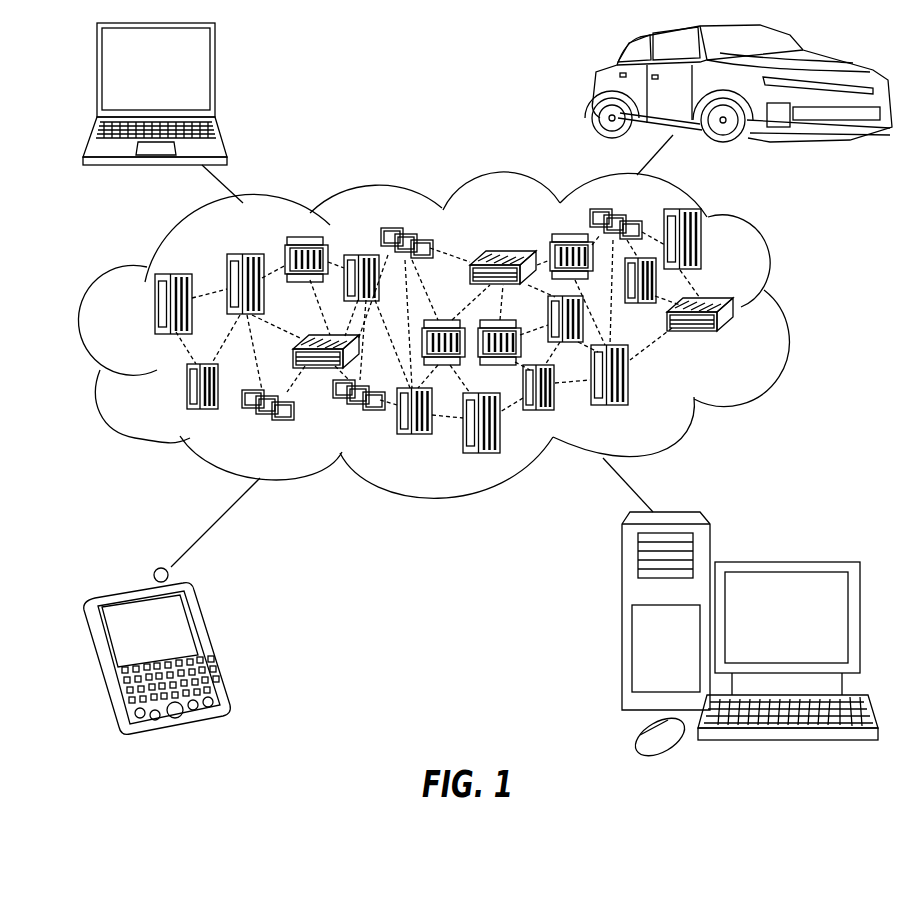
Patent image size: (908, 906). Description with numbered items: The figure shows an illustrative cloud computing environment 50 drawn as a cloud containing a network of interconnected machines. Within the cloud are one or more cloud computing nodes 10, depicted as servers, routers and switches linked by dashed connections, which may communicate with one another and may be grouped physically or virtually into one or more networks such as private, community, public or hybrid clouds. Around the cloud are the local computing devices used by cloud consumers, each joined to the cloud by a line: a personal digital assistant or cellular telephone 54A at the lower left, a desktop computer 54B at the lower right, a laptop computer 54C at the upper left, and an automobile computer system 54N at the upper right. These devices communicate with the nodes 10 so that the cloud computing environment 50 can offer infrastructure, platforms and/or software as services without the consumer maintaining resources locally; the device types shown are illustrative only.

The cloud computing nodes 10 is at (488, 331).
The cloud computing environment 50 is at (457, 335).
The personal digital assistant (PDA) or cellular telephone 54A is at (178, 651).
The desktop computer 54B is at (750, 637).
The laptop computer 54C is at (182, 94).
The automobile computer system 54N is at (712, 83).